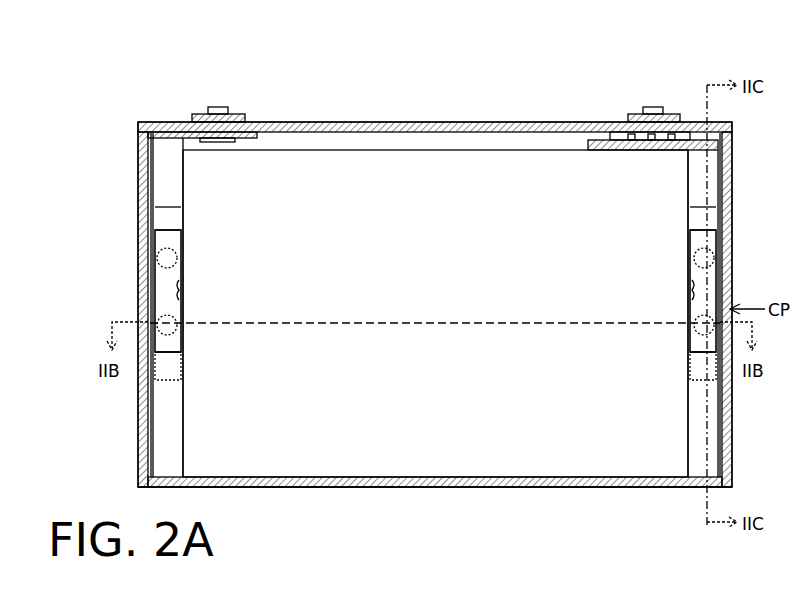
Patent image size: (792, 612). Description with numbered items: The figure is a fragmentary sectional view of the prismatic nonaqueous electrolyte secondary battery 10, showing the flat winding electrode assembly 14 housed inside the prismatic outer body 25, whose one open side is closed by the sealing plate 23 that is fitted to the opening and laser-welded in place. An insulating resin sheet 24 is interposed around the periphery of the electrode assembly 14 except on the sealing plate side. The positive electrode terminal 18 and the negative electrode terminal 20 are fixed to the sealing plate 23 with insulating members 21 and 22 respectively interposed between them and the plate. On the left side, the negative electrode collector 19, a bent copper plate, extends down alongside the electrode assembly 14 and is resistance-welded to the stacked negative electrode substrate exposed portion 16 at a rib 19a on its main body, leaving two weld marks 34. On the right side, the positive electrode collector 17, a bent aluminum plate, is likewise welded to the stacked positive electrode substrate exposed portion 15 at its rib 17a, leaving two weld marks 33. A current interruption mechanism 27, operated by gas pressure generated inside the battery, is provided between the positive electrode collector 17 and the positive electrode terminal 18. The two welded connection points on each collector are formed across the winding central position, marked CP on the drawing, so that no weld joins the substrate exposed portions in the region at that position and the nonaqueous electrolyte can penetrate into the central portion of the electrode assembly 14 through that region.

The nonaqueous electrolyte secondary battery 10 is at (127, 56).
The flat winding electrode assembly 14 is at (463, 425).
The positive electrode substrate exposed portion 15 is at (712, 440).
The negative electrode substrate exposed portion 16 is at (160, 428).
The positive electrode collector 17 is at (727, 205).
The rib 17a is at (688, 248).
The positive electrode terminal 18 is at (645, 108).
The negative electrode collector 19 is at (170, 232).
The rib 19a is at (183, 240).
The negative electrode terminal 20 is at (210, 108).
The insulating member 21 is at (632, 118).
The insulating member 22 is at (240, 114).
The sealing plate 23 is at (470, 122).
The insulating resin sheet 24 is at (543, 482).
The prismatic outer body 25 is at (630, 488).
The current interruption mechanism 27 is at (640, 147).
The weld mark 33 is at (700, 328).
The weld mark 34 is at (172, 328).